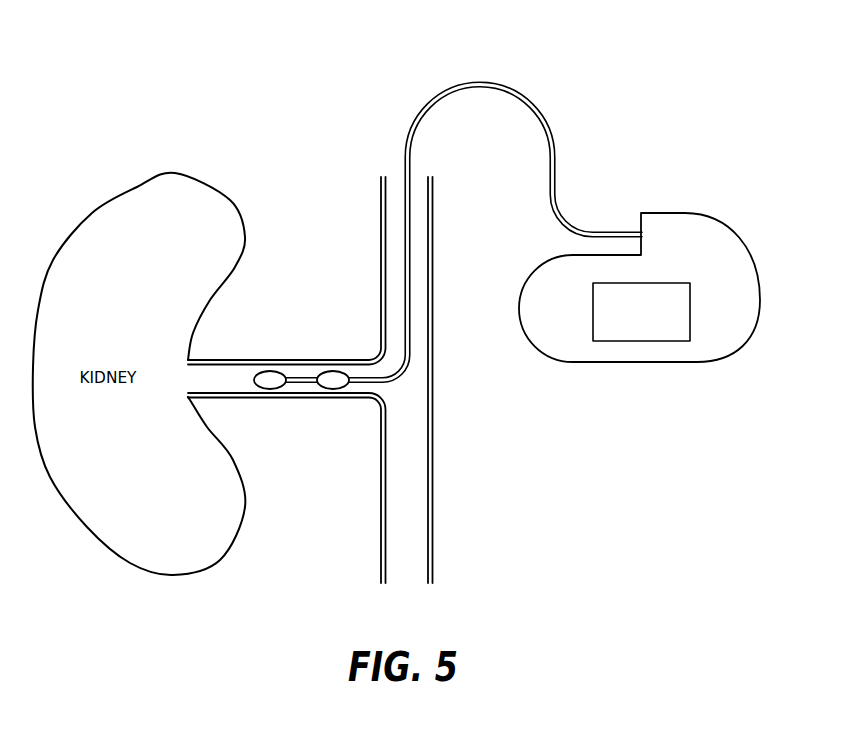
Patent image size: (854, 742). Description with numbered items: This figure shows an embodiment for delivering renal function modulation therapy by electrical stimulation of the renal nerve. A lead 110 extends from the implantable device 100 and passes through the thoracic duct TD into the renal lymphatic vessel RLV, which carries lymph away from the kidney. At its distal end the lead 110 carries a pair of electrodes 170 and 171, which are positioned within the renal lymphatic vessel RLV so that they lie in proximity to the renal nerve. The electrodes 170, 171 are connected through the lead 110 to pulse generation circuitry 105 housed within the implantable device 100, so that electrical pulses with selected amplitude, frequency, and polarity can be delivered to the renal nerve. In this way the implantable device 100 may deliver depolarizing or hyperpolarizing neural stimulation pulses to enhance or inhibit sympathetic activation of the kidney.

The implantable device 100 is at (685, 213).
The pulse generation circuitry 105 is at (643, 283).
The lead 110 is at (479, 82).
The electrode 170 is at (270, 380).
The electrode 171 is at (333, 380).
The renal lymphatic vessel RLV is at (292, 397).
The thoracic duct TD is at (432, 378).